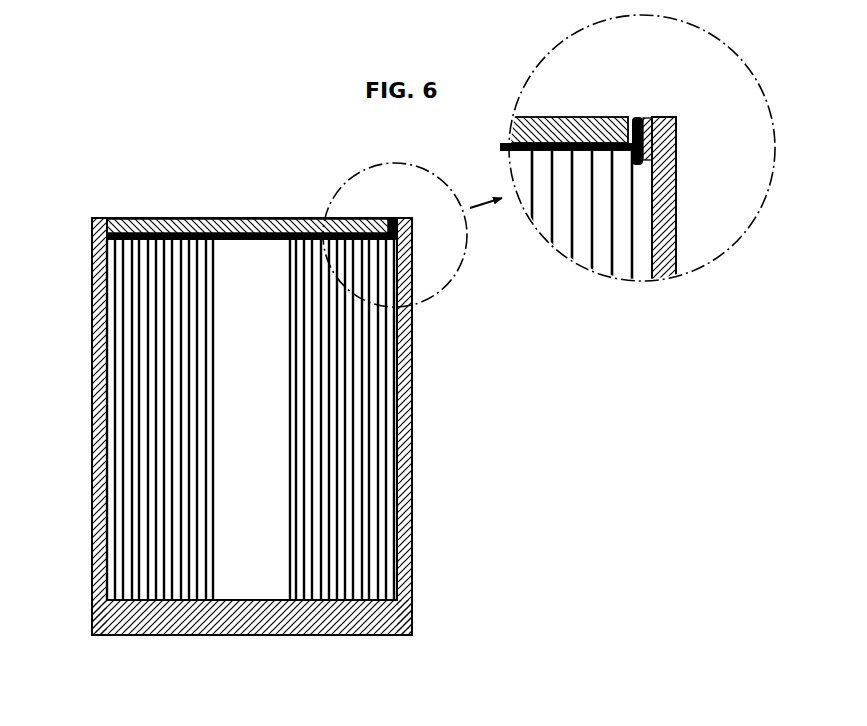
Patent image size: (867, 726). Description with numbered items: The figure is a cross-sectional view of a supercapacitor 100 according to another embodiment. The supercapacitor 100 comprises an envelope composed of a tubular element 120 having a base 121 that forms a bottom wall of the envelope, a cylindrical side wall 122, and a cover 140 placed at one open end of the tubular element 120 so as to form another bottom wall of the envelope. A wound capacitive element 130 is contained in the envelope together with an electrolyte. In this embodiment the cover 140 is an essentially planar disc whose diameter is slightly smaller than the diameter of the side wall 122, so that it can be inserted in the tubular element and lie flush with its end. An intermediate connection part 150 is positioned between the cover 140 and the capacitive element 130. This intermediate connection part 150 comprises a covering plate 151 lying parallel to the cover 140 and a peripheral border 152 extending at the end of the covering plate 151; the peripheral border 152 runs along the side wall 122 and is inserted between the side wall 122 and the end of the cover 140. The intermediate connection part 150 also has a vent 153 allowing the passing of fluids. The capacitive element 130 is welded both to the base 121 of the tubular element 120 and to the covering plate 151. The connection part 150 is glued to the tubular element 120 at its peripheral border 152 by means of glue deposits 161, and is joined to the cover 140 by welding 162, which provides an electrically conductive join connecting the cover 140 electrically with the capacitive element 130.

The supercapacitor 100 is at (469, 373).
The tubular element 120 is at (415, 420).
The base 121 is at (251, 627).
The cylindrical side wall 122 is at (100, 437).
The wound capacitive element 130 is at (150, 355).
The cover 140 is at (196, 218).
The intermediate connection part 150 is at (152, 232).
The covering plate 151 is at (263, 241).
The peripheral border 152 is at (655, 123).
The vent 153 is at (243, 250).
The glue deposits 161 is at (653, 143).
The welding 162 is at (635, 124).